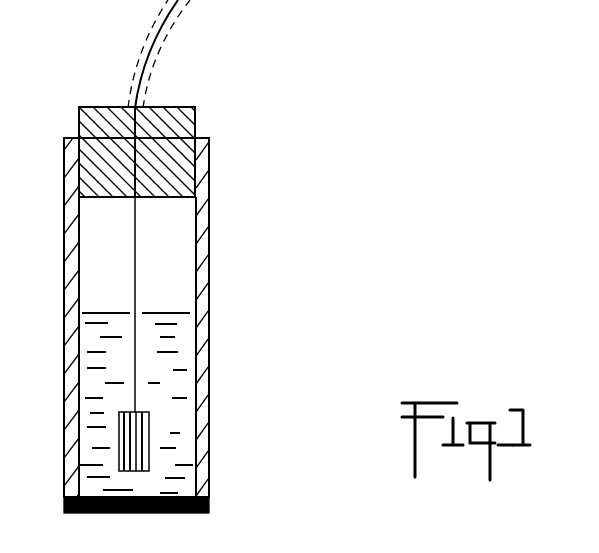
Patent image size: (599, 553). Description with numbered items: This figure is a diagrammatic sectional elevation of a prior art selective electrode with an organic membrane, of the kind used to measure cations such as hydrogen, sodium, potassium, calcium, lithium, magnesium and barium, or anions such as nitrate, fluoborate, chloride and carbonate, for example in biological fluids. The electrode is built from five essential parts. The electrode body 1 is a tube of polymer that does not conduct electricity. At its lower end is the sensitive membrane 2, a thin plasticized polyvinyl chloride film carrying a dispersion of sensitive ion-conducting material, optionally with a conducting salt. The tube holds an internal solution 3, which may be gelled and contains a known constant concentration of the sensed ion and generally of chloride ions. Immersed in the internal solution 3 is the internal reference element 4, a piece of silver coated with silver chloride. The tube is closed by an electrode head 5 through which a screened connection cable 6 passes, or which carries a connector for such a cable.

The electrode body 1 is at (200, 205).
The sensitive membrane 2 is at (210, 508).
The internal solution 3 is at (180, 444).
The internal reference element 4 is at (147, 423).
The electrode head 5 is at (173, 133).
The screened connection cable 6 is at (170, 22).